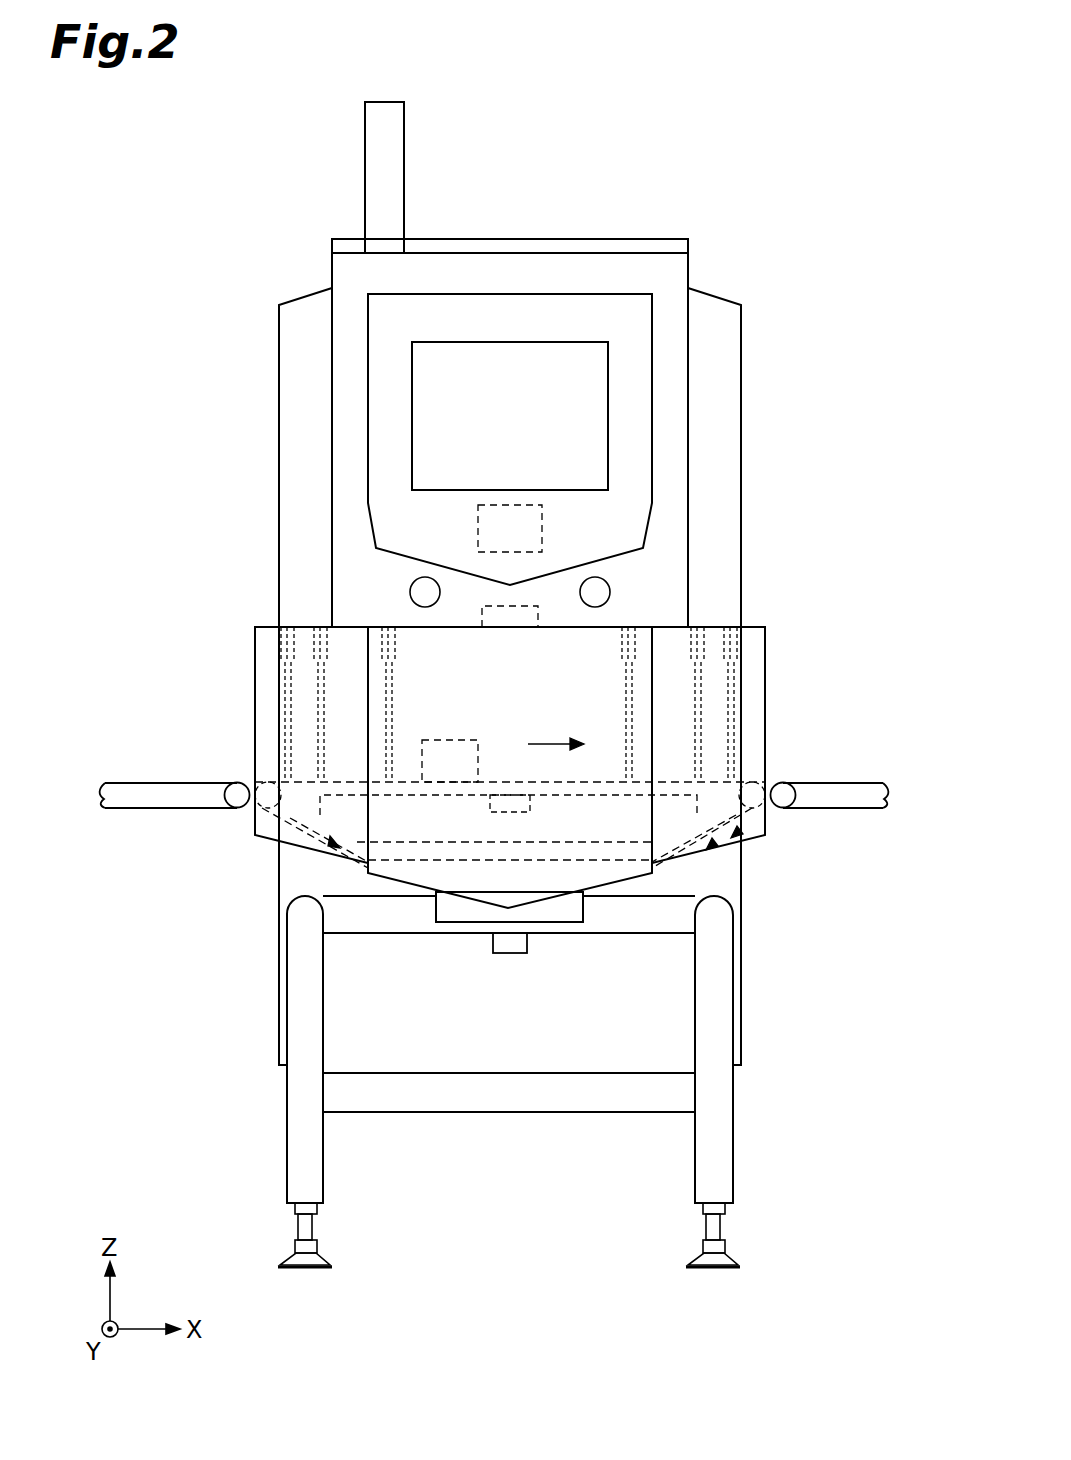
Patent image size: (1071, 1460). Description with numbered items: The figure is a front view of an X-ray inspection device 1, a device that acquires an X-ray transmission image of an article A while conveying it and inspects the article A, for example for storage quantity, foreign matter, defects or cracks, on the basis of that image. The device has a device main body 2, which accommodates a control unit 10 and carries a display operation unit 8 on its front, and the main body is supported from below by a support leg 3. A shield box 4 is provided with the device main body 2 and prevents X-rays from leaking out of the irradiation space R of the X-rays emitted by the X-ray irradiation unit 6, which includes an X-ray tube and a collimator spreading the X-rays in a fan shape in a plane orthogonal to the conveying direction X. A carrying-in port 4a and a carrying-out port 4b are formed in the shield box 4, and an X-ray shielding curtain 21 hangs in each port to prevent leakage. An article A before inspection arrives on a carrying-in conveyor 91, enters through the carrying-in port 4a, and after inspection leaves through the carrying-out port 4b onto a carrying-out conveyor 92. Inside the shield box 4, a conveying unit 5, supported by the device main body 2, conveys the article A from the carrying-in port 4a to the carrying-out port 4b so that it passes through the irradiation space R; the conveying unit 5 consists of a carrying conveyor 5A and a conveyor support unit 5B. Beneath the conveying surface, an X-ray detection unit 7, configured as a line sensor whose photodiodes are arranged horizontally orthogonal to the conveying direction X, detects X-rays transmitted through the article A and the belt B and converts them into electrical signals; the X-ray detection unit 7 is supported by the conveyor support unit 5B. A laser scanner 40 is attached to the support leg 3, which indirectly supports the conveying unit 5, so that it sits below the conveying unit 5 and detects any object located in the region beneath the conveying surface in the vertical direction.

The X-ray inspection device 1 is at (813, 194).
The device main body 2 is at (637, 239).
The support leg 3 is at (302, 1133).
The shield box 4 is at (658, 627).
The carrying-in port 4a is at (255, 717).
The carrying-out port 4b is at (765, 717).
The conveying unit 5 is at (758, 835).
The carrying conveyor 5A is at (712, 850).
The conveyor support unit 5B is at (338, 840).
The X-ray irradiation unit 6 is at (527, 606).
The X-ray detection unit 7 is at (488, 808).
The display operation unit 8 is at (412, 425).
The control unit 10 is at (478, 530).
The X-ray shielding curtain 21 is at (390, 693).
The laser scanner 40 is at (527, 944).
The carrying-in conveyor 91 is at (130, 792).
The carrying-out conveyor 92 is at (872, 790).
The article A is at (445, 738).
The belt B is at (504, 782).
The irradiation space R is at (593, 690).
The conveying direction X is at (543, 744).